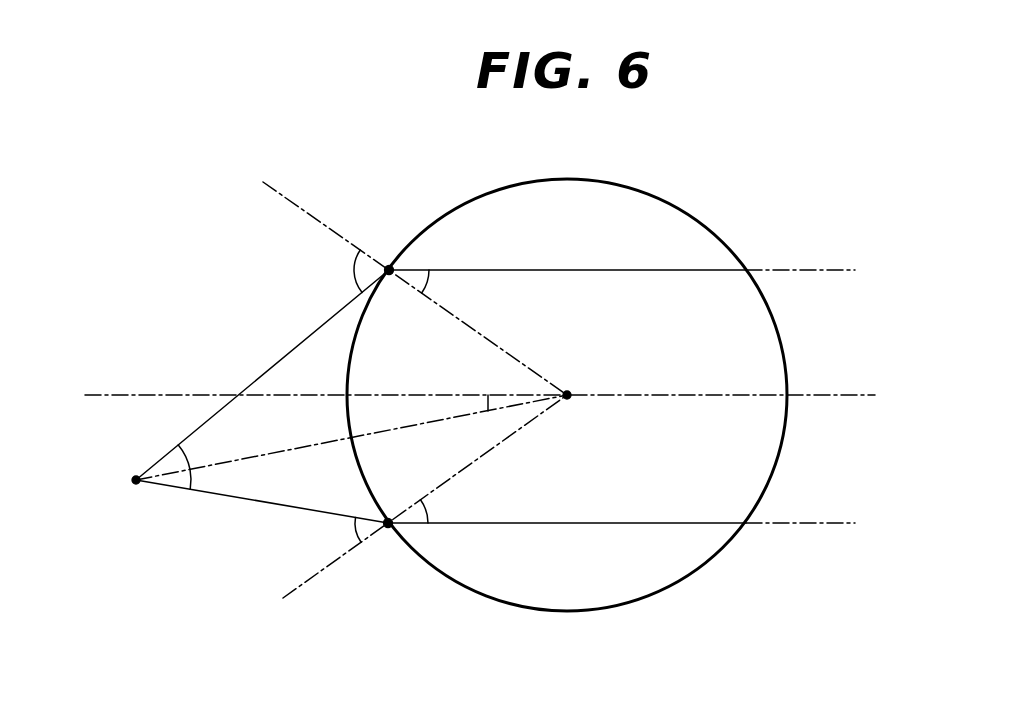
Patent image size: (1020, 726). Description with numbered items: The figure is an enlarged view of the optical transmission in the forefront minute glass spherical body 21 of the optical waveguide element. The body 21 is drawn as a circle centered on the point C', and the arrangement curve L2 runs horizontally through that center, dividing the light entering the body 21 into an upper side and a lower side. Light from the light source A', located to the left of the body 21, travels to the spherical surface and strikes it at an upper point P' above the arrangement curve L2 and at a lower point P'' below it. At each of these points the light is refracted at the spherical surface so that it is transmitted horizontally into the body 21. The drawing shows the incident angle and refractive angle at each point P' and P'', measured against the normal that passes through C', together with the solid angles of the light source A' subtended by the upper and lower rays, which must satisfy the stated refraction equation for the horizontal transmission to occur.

The minute glass spherical body 21 is at (618, 215).
The arrangement curve L2 is at (829, 395).
The center of lens C' is at (593, 368).
The light source A' is at (106, 513).
The incident point (upper) P' is at (397, 226).
The incident point (lower) P'' is at (392, 569).